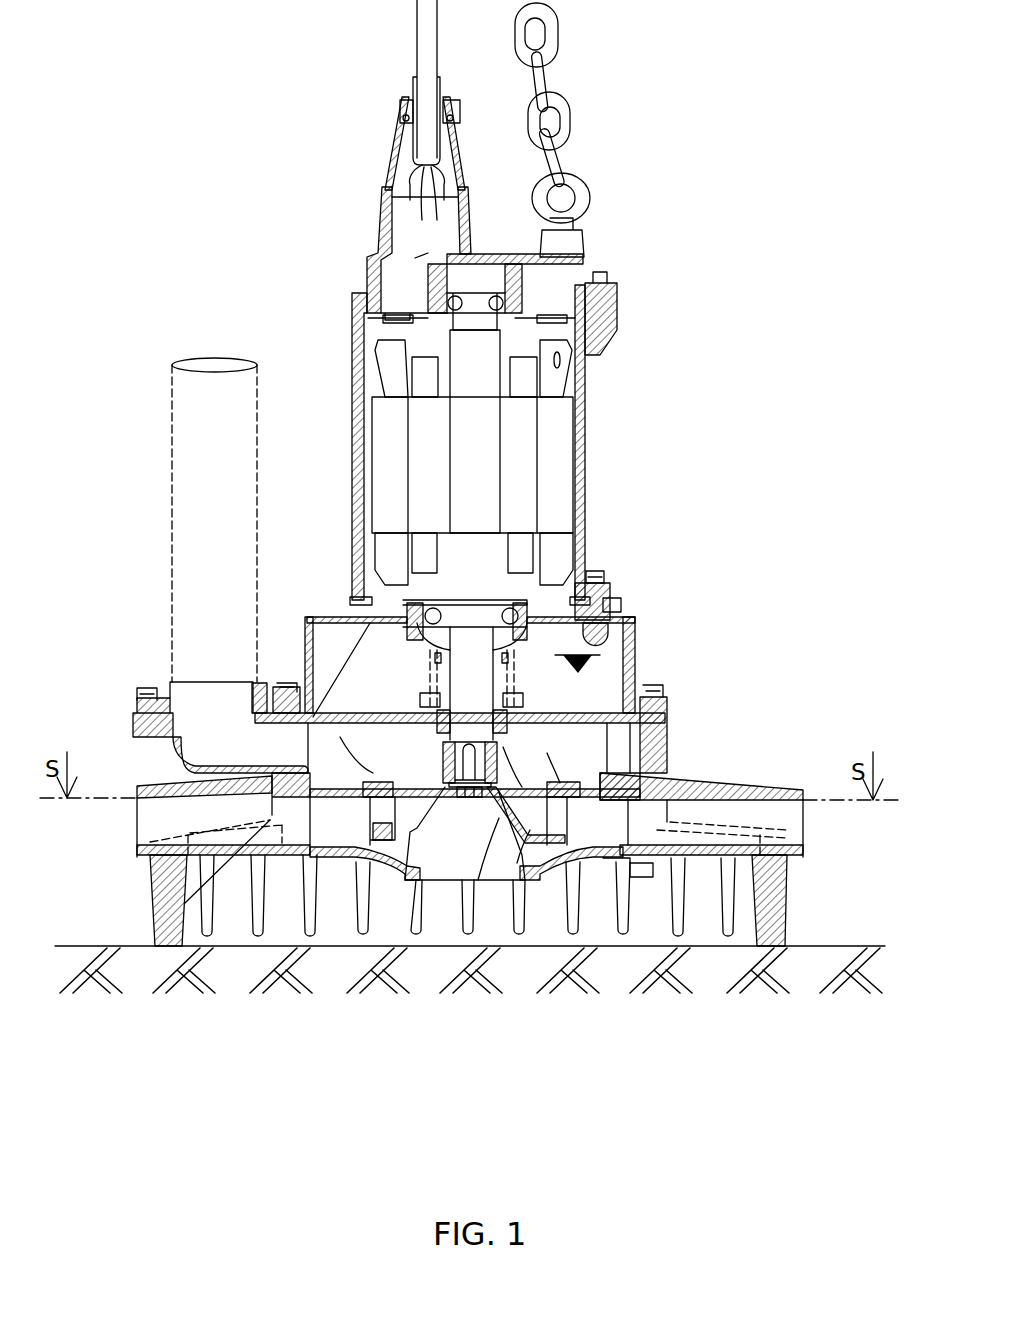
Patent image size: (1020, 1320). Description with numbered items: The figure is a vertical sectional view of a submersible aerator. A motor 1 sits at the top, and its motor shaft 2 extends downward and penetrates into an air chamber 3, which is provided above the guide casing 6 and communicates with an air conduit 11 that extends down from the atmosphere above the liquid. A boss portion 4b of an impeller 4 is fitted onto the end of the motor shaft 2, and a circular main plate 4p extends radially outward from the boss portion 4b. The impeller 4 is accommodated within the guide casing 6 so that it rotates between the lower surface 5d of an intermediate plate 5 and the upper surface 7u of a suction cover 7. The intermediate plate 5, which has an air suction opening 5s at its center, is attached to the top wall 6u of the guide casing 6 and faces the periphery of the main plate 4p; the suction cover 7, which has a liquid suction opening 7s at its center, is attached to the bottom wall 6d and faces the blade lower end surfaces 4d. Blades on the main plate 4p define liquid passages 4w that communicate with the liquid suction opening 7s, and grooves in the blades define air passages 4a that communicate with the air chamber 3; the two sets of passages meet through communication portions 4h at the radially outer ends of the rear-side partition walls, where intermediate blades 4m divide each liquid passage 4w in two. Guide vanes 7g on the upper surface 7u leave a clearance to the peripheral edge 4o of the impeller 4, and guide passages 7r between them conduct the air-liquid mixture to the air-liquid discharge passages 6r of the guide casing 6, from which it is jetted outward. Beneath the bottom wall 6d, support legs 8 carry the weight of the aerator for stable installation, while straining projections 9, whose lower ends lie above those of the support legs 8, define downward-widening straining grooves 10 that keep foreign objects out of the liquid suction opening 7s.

The motor 1 is at (599, 443).
The motor shaft 2 is at (613, 603).
The air chamber 3 is at (243, 750).
The impeller 4 is at (498, 834).
The air passages 4a is at (522, 848).
The boss portion 4b is at (473, 690).
The lower end surfaces 4d is at (545, 845).
The communication portions 4h is at (378, 832).
The intermediate blades 4m is at (357, 847).
The peripheral edge 4o is at (357, 790).
The main plate 4p is at (407, 800).
The liquid passages 4w is at (413, 828).
The intermediate plate 5 is at (617, 762).
The lower surface 5d is at (587, 837).
The air suction opening 5s is at (560, 735).
The guide casing 6 is at (817, 782).
The bottom wall 6d is at (712, 847).
The air-liquid discharge passages 6r is at (203, 812).
The top wall 6u is at (743, 782).
The suction cover 7 is at (617, 813).
The guide vanes 7g is at (620, 880).
The guide passages 7r is at (333, 830).
The liquid suction opening 7s is at (453, 860).
The upper surface 7u is at (578, 808).
The support legs 8 is at (783, 905).
The straining projections 9 is at (688, 907).
The straining grooves 10 is at (652, 910).
The air conduit 11 is at (257, 480).